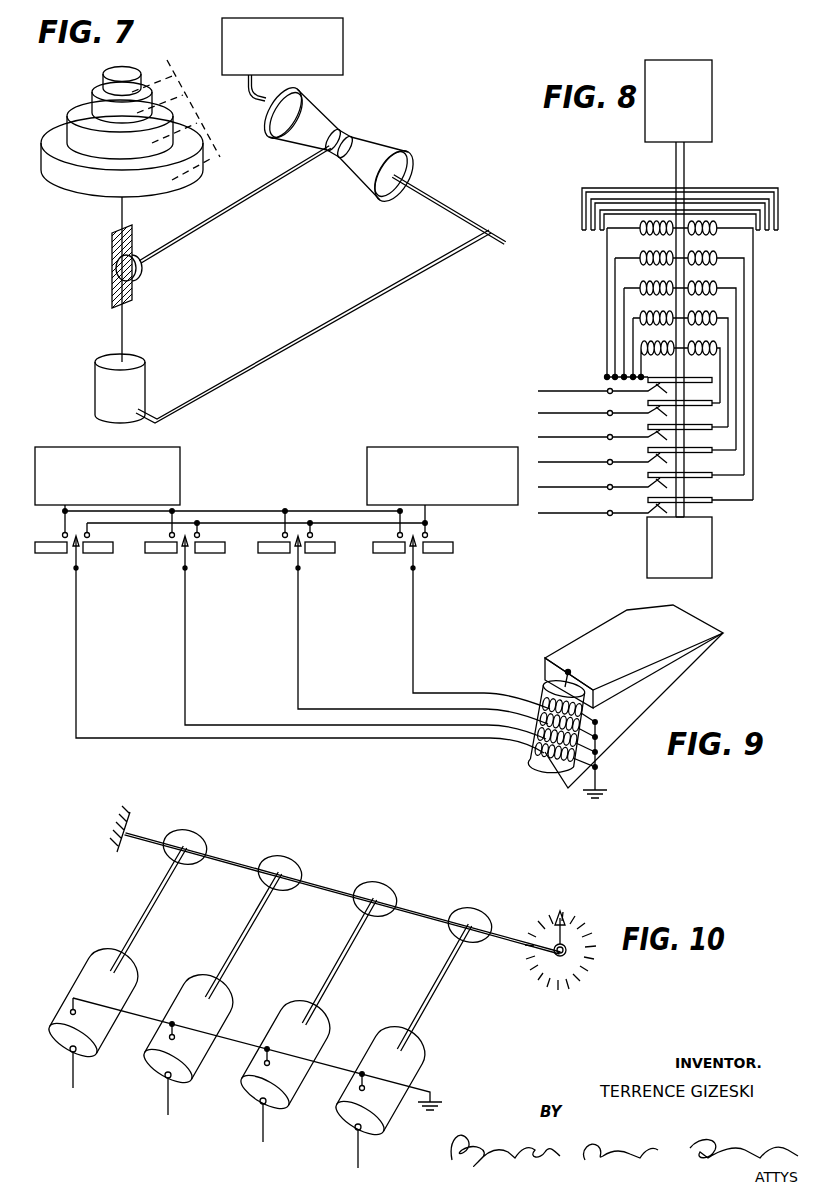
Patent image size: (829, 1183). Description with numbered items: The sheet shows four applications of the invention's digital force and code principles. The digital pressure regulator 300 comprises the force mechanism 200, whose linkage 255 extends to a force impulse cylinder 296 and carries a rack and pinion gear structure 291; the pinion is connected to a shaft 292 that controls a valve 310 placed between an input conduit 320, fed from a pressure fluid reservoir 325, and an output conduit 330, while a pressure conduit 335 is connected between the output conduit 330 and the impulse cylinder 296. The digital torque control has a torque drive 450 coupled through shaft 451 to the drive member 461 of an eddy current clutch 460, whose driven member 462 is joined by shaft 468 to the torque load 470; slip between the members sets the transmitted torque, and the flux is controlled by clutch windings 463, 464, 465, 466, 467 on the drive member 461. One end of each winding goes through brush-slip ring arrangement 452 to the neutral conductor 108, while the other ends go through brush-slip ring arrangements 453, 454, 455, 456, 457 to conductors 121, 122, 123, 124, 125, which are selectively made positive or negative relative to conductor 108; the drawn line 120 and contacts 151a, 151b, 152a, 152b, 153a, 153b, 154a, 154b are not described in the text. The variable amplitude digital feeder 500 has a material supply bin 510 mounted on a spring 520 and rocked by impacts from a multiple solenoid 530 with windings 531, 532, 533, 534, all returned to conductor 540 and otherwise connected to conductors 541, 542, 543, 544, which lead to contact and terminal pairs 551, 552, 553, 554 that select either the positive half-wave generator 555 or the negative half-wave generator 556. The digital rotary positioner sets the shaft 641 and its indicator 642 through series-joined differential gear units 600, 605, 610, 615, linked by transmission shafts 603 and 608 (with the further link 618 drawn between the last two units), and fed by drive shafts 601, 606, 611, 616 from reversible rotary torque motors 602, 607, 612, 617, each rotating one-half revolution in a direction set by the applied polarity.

In FIG. 7, the force mechanism 200 is at (73, 96).
In FIG. 7, the linkage 255 is at (118, 210).
In FIG. 7, the rack and pinion gear structure 291 is at (136, 286).
In FIG. 7, the shaft 292 is at (250, 199).
In FIG. 7, the force impulse cylinder 296 is at (143, 376).
In FIG. 7, the digital pressure regulator 300 is at (300, 280).
In FIG. 7, the valve 310 is at (352, 134).
In FIG. 7, the input conduit 320 is at (255, 100).
In FIG. 7, the pressure fluid reservoir 325 is at (333, 45).
In FIG. 7, the output conduit 330 is at (455, 205).
In FIG. 7, the pressure conduit 335 is at (416, 276).
In FIG. 8, the torque drive 450 is at (703, 556).
In FIG. 8, the shaft 451 is at (678, 519).
In FIG. 8, the brush-slip ring arrangement 452 is at (712, 375).
In FIG. 8, the brush-slip ring arrangement 453 is at (712, 398).
In FIG. 8, the brush-slip ring arrangement 454 is at (712, 422).
In FIG. 8, the brush-slip ring arrangement 455 is at (712, 446).
In FIG. 8, the brush-slip ring arrangement 456 is at (712, 471).
In FIG. 8, the brush-slip ring arrangement 457 is at (712, 495).
In FIG. 8, the clutch 460 is at (646, 188).
In FIG. 8, the drive member 461 is at (750, 206).
In FIG. 8, the driven member 462 is at (750, 186).
In FIG. 8, the clutch winding 463 is at (641, 353).
In FIG. 8, the clutch winding 464 is at (633, 323).
In FIG. 8, the clutch winding 465 is at (624, 294).
In FIG. 8, the clutch winding 466 is at (615, 265).
In FIG. 8, the clutch winding 467 is at (607, 235).
In FIG. 8, the shaft 468 is at (676, 168).
In FIG. 8, the torque load 470 is at (700, 85).
In FIG. 8, the conductor 108 is at (570, 389).
In FIG. 10, the conductor 108 is at (432, 1100).
In FIG. 8, the input line 120 is at (570, 411).
In FIG. 10, the conductor 121 is at (357, 1146).
In FIG. 8, the conductor 122 is at (570, 435).
In FIG. 10, the conductor 122 is at (262, 1130).
In FIG. 8, the conductor 123 is at (570, 460).
In FIG. 10, the conductor 123 is at (167, 1104).
In FIG. 8, the conductor 124 is at (570, 485).
In FIG. 10, the conductor 124 is at (72, 1078).
In FIG. 8, the conductor 125 is at (570, 511).
In FIG. 9, the variable amplitude digital feeder 500 is at (531, 613).
In FIG. 9, the material supply bin 510 is at (697, 627).
In FIG. 9, the spring 520 is at (672, 680).
In FIG. 9, the multiple solenoid 530 is at (527, 749).
In FIG. 9, the winding 531 is at (534, 754).
In FIG. 9, the winding 532 is at (537, 739).
In FIG. 9, the winding 533 is at (540, 724).
In FIG. 9, the winding 534 is at (542, 708).
In FIG. 9, the conductor 540 is at (597, 788).
In FIG. 9, the conductor 541 is at (76, 682).
In FIG. 9, the conductor 542 is at (185, 682).
In FIG. 9, the conductor 543 is at (298, 682).
In FIG. 9, the conductor 544 is at (413, 682).
In FIG. 9, the contact and terminal pair 551 is at (93, 575).
In FIG. 9, the contact and terminal pair 552 is at (203, 575).
In FIG. 9, the contact and terminal pair 553 is at (316, 575).
In FIG. 9, the contact and terminal pair 554 is at (432, 575).
In FIG. 9, the positive half-wave generator 555 is at (446, 447).
In FIG. 9, the negative half-wave generator 556 is at (80, 447).
In FIG. 9, the contact 151a is at (112, 553).
In FIG. 9, the contact 151b is at (66, 556).
In FIG. 9, the contact 152a is at (202, 553).
In FIG. 9, the contact 152b is at (150, 553).
In FIG. 9, the contact 153a is at (345, 572).
In FIG. 9, the contact 153b is at (262, 553).
In FIG. 9, the contact 154a is at (452, 553).
In FIG. 9, the contact 154b is at (376, 553).
In FIG. 10, the differential gear unit 600 is at (484, 910).
In FIG. 10, the drive shaft 601 is at (423, 1005).
In FIG. 10, the reversible rotary torque motor 602 is at (410, 1056).
In FIG. 10, the transmission shaft 603 is at (438, 921).
In FIG. 10, the differential gear unit 605 is at (386, 883).
In FIG. 10, the drive shaft 606 is at (340, 965).
In FIG. 10, the reversible rotary torque motor 607 is at (313, 1018).
In FIG. 10, the transmission shaft 608 is at (335, 892).
In FIG. 10, the differential gear unit 610 is at (288, 857).
In FIG. 10, the drive shaft 611 is at (243, 945).
In FIG. 10, the reversible torque motor 612 is at (217, 992).
In FIG. 10, the differential gear unit 615 is at (192, 830).
In FIG. 10, the drive shaft 616 is at (146, 918).
In FIG. 10, the reversible rotary torque motor 617 is at (122, 970).
In FIG. 10, the shaft segment 618 is at (238, 864).
In FIG. 10, the shaft 641 is at (520, 946).
In FIG. 10, the indicator 642 is at (583, 925).